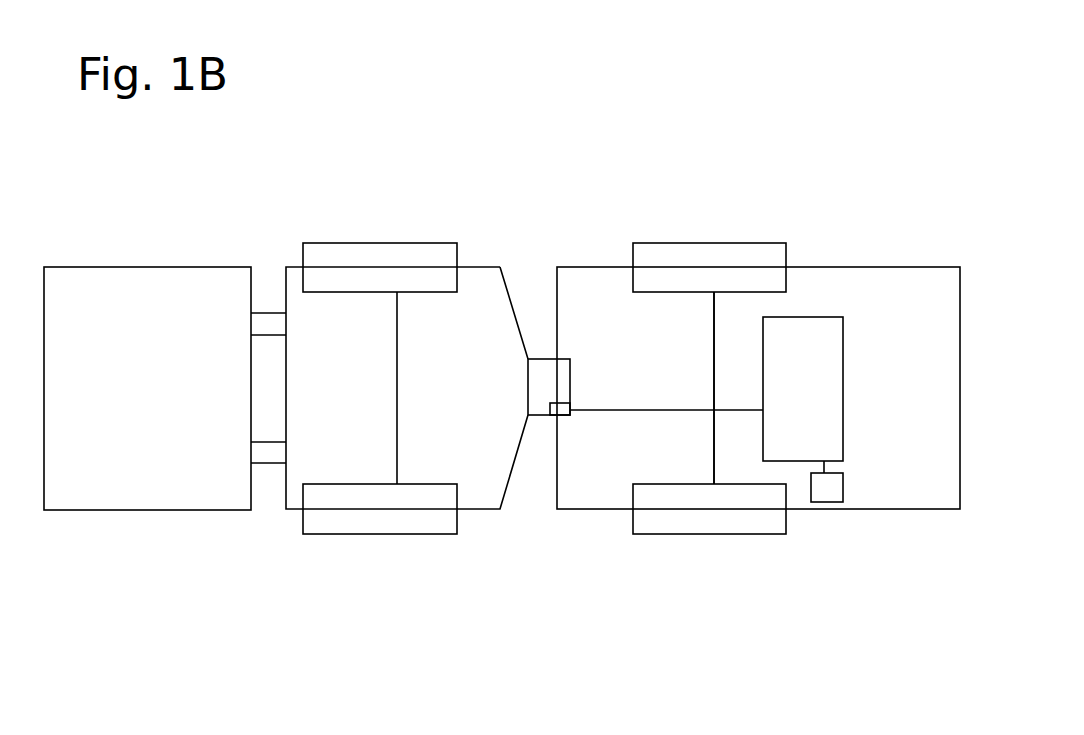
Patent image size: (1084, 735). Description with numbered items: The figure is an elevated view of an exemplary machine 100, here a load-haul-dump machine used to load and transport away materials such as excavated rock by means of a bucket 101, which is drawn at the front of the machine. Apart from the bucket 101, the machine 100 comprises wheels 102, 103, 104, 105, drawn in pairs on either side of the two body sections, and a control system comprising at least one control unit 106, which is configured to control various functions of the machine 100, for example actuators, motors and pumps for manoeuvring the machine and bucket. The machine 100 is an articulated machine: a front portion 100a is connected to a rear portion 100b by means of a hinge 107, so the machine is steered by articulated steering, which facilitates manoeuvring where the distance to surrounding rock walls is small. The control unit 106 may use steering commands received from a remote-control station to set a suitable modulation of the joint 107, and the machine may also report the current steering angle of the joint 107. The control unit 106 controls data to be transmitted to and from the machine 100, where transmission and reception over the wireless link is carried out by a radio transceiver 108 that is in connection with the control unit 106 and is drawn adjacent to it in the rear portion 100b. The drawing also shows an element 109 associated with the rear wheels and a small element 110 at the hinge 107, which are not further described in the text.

The machine 100 is at (623, 401).
The front portion 100a is at (417, 402).
The rear portion 100b is at (758, 388).
The bucket 101 is at (156, 487).
The wheel 102 is at (417, 522).
The wheel 103 is at (752, 523).
The wheel 104 is at (429, 257).
The wheel 105 is at (743, 253).
The control unit 106 is at (803, 389).
The hinge 107 is at (559, 449).
The transceiver 108 is at (827, 490).
The rear axle 109 is at (713, 475).
The angle sensor 110 is at (565, 413).